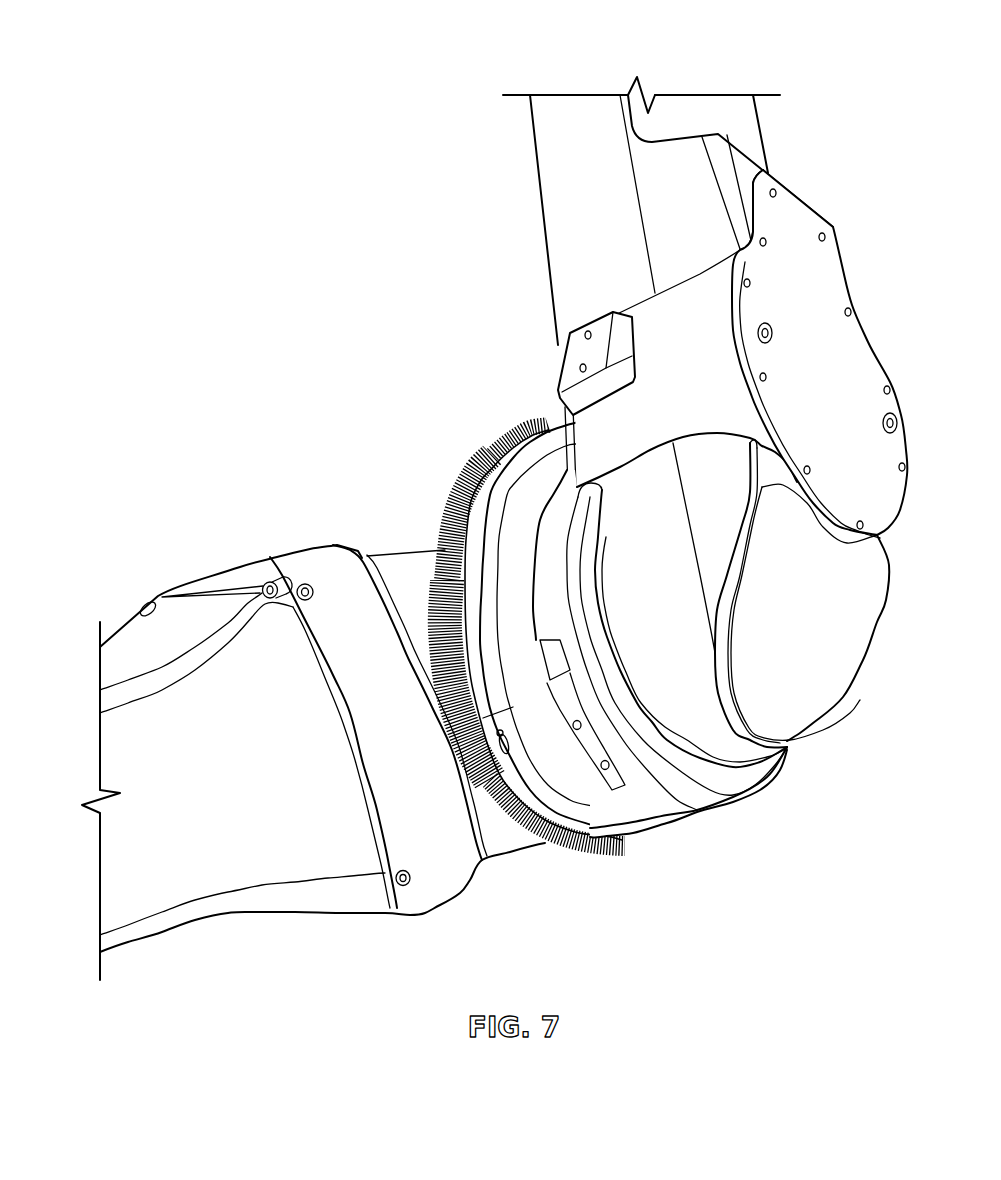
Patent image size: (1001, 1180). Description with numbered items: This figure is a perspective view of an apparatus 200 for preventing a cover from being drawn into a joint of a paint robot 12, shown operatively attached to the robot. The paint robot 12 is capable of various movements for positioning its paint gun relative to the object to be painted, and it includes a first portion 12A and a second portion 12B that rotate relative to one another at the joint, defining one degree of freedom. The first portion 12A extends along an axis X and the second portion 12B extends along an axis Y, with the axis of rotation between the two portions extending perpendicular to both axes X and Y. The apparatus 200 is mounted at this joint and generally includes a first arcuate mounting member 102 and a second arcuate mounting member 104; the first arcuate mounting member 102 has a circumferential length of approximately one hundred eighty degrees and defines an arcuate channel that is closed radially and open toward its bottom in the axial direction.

The paint robot 12 is at (865, 665).
The first portion 12A is at (848, 337).
The second portion 12B is at (502, 853).
The apparatus 200 is at (536, 629).
The first arcuate mounting member 102 is at (601, 835).
The second arcuate mounting member 104 is at (493, 500).
The axis X is at (675, 203).
The axis Y is at (30, 868).